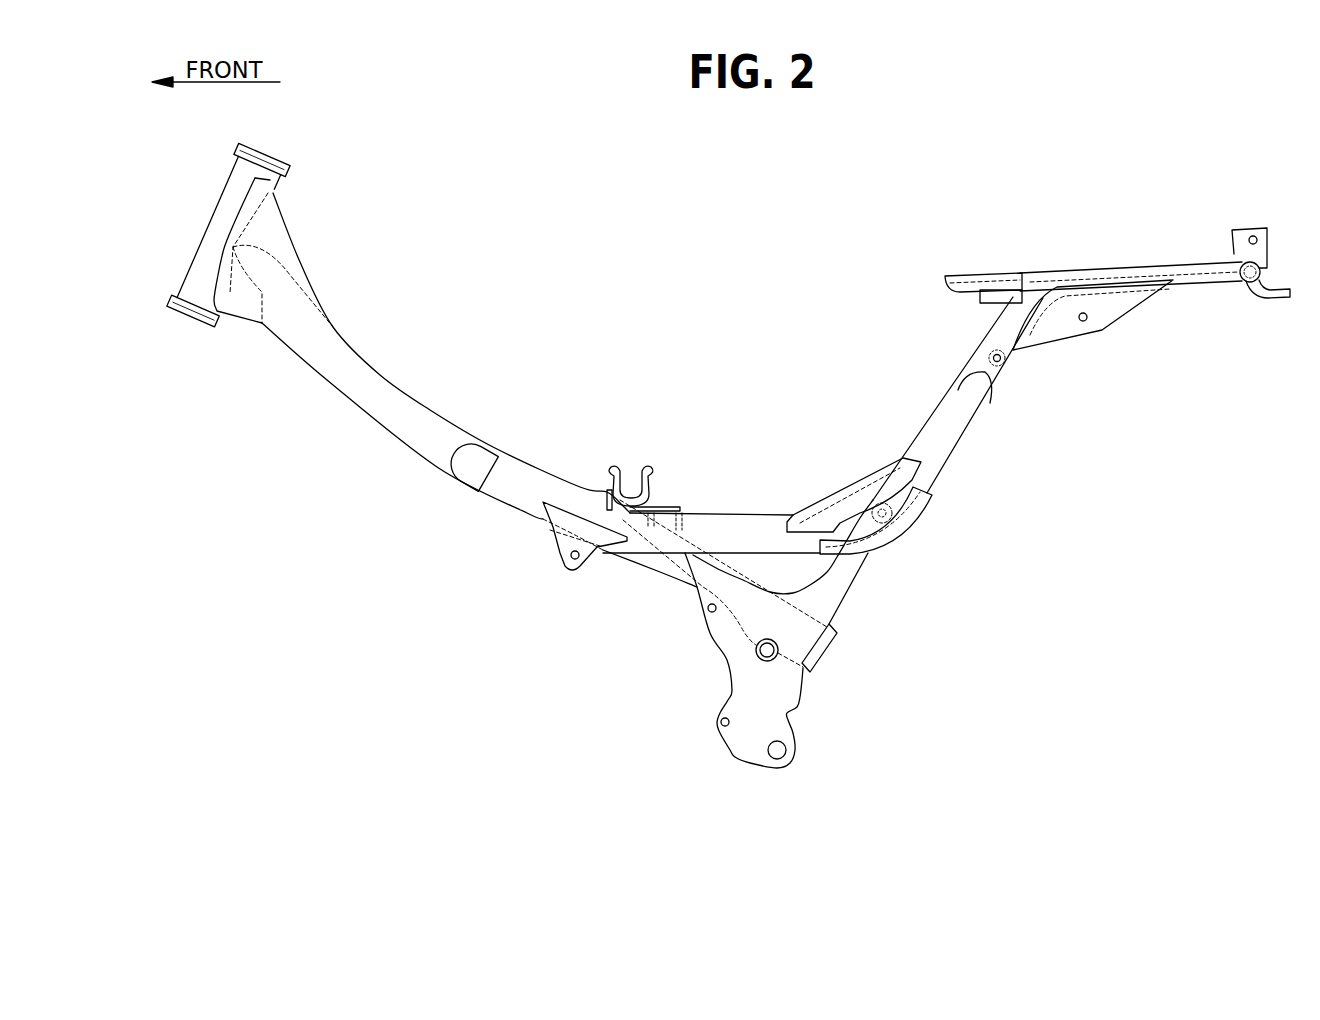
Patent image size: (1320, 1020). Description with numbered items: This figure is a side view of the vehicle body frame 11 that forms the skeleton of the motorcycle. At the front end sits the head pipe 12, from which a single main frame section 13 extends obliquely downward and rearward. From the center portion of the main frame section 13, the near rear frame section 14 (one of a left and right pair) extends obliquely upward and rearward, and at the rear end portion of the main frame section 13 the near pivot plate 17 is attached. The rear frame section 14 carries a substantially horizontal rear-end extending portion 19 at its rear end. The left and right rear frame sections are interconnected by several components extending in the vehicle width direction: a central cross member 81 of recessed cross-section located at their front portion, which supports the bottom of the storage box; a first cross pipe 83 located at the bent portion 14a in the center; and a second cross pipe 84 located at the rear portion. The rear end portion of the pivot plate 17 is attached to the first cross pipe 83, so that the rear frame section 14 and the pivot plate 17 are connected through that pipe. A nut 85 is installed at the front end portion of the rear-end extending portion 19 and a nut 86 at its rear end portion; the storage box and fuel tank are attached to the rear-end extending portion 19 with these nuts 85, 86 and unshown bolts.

The vehicle body frame 11 is at (562, 196).
The head pipe 12 is at (216, 224).
The main frame section 13 is at (387, 397).
The rear frame section 14 is at (943, 425).
The bent portion 14a is at (912, 527).
The pivot plate 17 is at (760, 767).
The rear-end extending portion 19 is at (1095, 272).
The central cross member 81 is at (670, 497).
The first cross pipe 83 is at (893, 530).
The second cross pipe 84 is at (989, 353).
The nut 85 is at (948, 272).
The nut 86 is at (1203, 262).